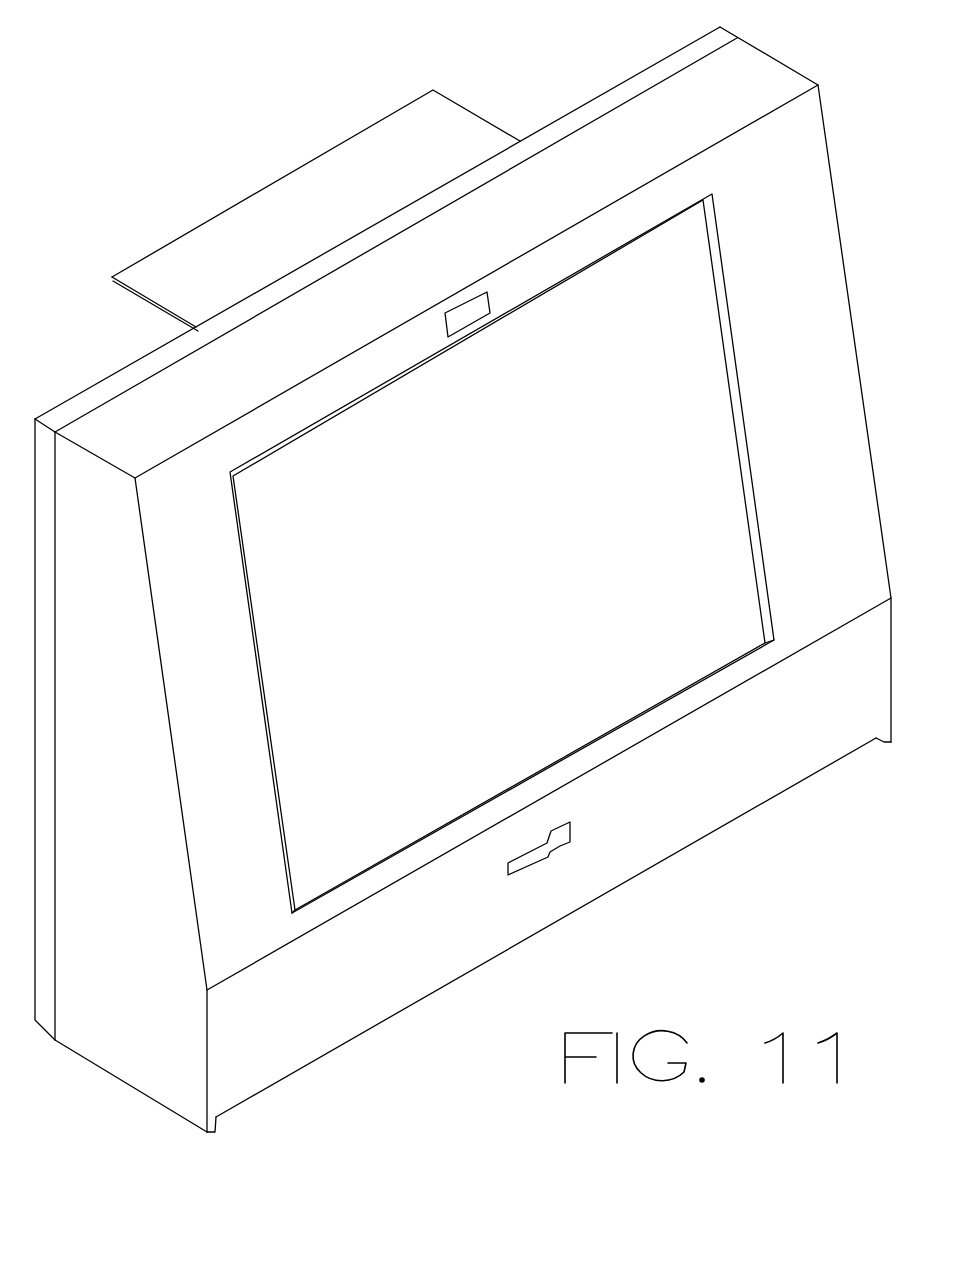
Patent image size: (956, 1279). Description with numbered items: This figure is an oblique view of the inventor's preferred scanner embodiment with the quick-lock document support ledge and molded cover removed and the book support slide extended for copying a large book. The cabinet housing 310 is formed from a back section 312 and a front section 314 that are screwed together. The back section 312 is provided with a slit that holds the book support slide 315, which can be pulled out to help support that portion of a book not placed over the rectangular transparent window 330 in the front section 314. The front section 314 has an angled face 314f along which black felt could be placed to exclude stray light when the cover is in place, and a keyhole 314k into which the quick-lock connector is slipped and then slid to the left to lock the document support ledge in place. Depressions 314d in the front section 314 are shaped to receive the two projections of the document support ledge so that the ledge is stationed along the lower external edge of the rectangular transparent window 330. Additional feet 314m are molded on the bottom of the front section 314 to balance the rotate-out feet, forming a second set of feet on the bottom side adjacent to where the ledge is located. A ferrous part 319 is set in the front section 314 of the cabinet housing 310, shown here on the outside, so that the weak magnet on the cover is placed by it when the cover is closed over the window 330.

The cabinet housing 310 is at (87, 317).
The back section 312 is at (632, 74).
The front section 314 is at (775, 58).
The angled face 314f is at (825, 138).
The depressions 314d is at (631, 720).
The keyhole 314k is at (573, 824).
The feet 314m is at (215, 1130).
The book support slide 315 is at (226, 207).
The ferrous part 319 is at (465, 312).
The rectangular transparent window 330 is at (550, 580).